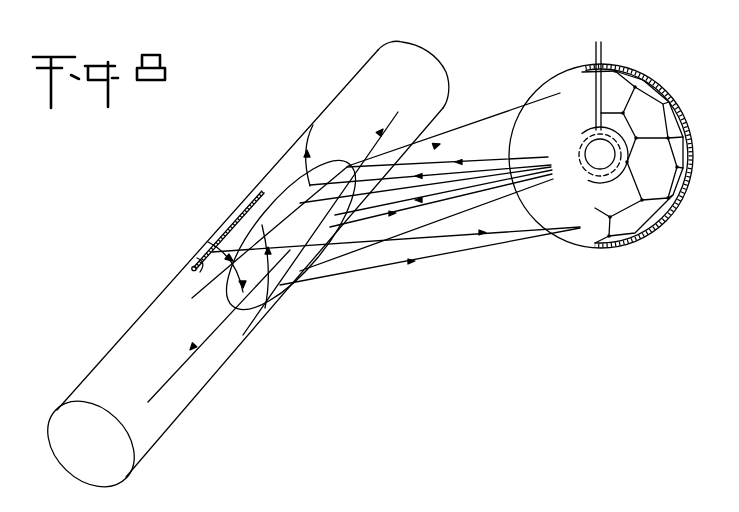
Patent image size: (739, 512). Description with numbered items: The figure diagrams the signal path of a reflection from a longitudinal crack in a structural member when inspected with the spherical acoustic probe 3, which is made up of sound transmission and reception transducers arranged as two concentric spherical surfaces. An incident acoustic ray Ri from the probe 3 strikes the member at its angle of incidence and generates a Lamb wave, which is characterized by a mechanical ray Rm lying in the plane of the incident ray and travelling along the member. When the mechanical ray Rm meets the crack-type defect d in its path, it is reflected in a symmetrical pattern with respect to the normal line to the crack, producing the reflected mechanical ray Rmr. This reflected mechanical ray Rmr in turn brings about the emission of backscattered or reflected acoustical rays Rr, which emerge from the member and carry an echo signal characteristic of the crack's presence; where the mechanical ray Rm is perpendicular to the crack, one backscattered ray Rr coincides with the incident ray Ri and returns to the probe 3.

The acoustic probe 3 is at (629, 258).
The mechanical ray Rm is at (218, 247).
The crack-type defect d is at (195, 268).
The reflected mechanical ray Rmr is at (256, 242).
The incident acoustic ray Ri is at (473, 207).
The backscattered acoustical rays Rr is at (450, 257).